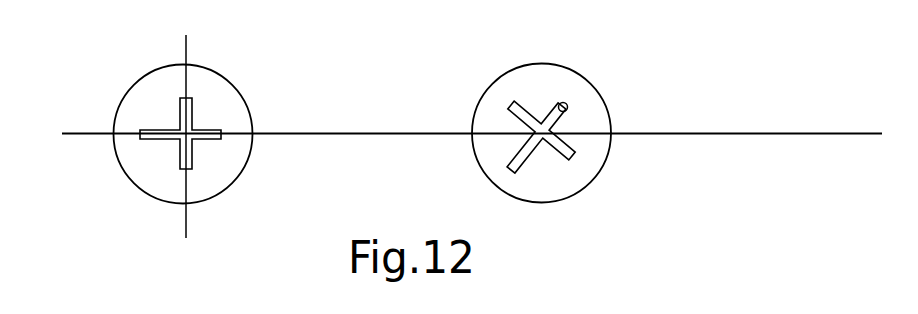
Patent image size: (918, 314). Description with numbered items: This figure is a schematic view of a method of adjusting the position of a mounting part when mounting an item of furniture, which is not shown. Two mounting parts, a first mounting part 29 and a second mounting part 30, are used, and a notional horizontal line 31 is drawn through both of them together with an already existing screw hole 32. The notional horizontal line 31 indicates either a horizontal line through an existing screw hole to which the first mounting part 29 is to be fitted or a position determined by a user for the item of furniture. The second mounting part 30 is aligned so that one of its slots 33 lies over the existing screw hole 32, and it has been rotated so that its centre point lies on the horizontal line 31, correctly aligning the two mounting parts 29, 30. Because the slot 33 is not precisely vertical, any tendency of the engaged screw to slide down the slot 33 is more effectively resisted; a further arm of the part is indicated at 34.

The first mounting part 29 is at (232, 83).
The second mounting part 30 is at (590, 82).
The notional horizontal line 31 is at (749, 133).
The existing screw hole 32 is at (568, 108).
The slot 33 is at (548, 122).
The arm of cross-shaped slot 34 is at (543, 140).